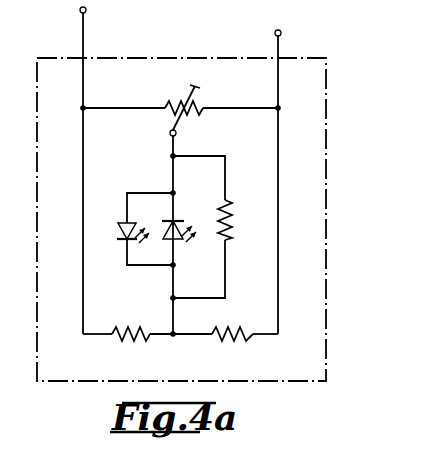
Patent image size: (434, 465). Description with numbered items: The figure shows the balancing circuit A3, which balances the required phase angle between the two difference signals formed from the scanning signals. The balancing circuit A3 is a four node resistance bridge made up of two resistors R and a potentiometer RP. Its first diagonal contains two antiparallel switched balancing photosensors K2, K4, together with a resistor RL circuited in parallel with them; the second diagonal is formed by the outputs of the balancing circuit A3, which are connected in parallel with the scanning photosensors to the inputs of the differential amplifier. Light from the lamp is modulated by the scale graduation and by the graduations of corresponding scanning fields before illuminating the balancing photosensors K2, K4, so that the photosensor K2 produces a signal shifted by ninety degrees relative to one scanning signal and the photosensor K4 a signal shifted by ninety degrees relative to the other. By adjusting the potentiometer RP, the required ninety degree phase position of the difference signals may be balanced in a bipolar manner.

The balancing circuit A3 is at (333, 221).
The potentiometer RP is at (198, 113).
The resistor RL is at (236, 216).
The balancing photosensor K2 is at (120, 237).
The balancing photosensor K4 is at (176, 240).
The resistor R is at (126, 340).